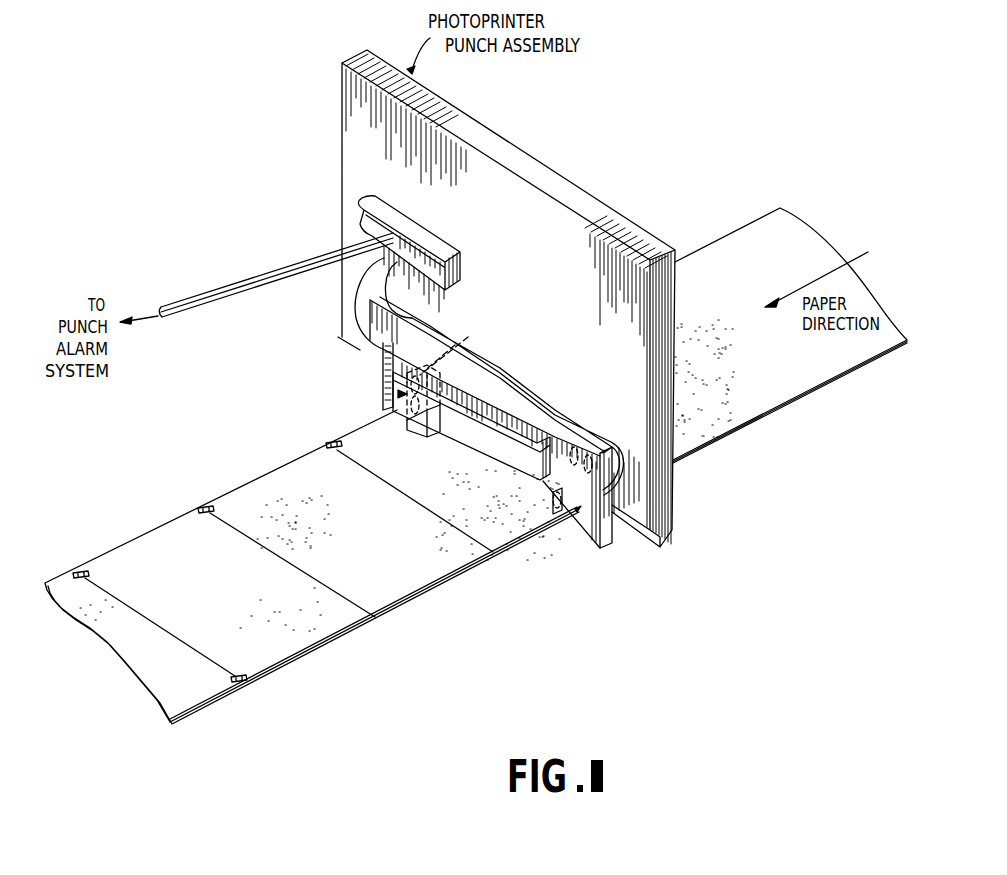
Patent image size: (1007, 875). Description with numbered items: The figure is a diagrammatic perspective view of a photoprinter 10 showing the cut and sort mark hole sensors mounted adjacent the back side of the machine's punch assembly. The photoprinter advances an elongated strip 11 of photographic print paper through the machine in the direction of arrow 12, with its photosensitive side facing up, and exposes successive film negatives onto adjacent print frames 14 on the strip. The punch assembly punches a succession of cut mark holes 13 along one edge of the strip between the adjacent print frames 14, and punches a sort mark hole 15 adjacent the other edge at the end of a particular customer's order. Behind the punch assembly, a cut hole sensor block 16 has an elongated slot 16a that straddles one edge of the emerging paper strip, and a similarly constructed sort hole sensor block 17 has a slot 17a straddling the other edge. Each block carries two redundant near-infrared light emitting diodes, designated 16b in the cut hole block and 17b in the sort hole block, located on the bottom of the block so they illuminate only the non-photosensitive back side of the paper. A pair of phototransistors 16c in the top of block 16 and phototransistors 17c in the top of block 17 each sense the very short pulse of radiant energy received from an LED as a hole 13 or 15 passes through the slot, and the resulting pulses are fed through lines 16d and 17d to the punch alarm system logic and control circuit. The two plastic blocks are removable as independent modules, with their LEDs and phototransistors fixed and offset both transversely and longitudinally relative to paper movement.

The photoprinter 10 is at (610, 202).
The elongated strip of photographic print paper 11 is at (753, 399).
The arrow 12 is at (823, 273).
The cut mark holes 13 is at (330, 443).
The print frames 14 is at (466, 482).
The sort mark hole 15 is at (245, 682).
The cut hole sensor block 16 is at (393, 365).
The elongated slot 16a is at (398, 394).
The light emitting diodes 16b is at (407, 410).
The phototransistors 16c is at (458, 345).
The lines 16d is at (355, 307).
The sort hole sensor block 17 is at (607, 532).
The slot 17a is at (581, 513).
The light emitting diodes 17b is at (553, 523).
The phototransistors 17c is at (570, 450).
The lines 17d is at (508, 385).